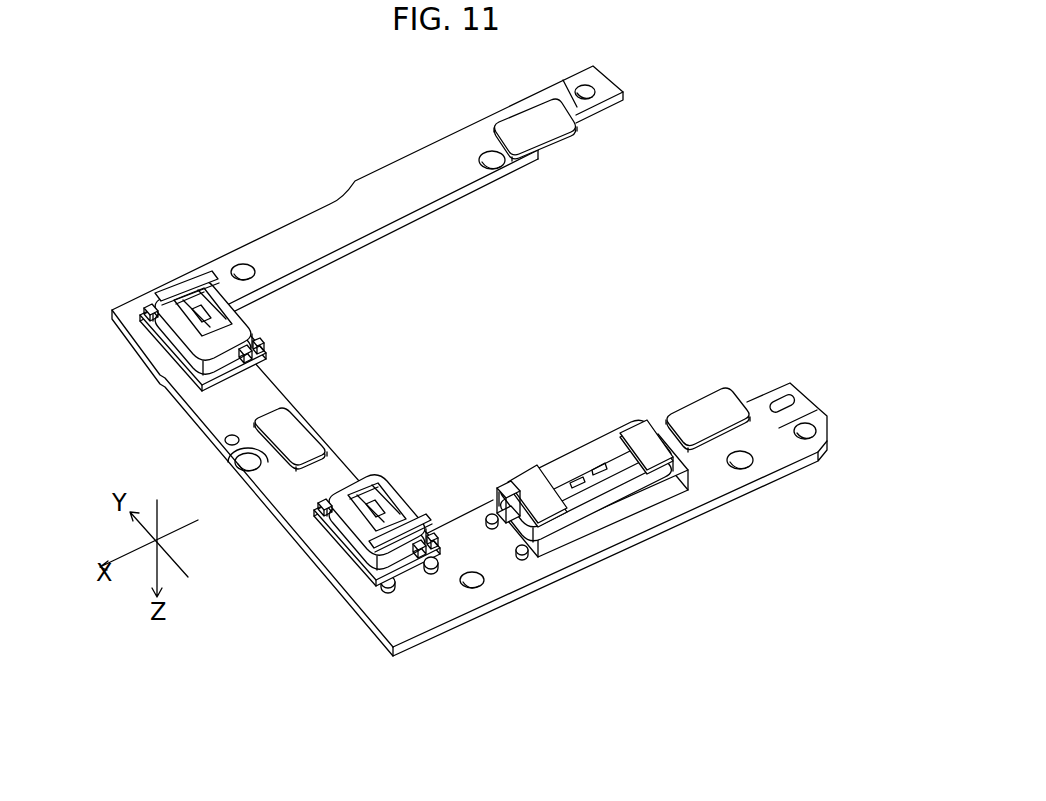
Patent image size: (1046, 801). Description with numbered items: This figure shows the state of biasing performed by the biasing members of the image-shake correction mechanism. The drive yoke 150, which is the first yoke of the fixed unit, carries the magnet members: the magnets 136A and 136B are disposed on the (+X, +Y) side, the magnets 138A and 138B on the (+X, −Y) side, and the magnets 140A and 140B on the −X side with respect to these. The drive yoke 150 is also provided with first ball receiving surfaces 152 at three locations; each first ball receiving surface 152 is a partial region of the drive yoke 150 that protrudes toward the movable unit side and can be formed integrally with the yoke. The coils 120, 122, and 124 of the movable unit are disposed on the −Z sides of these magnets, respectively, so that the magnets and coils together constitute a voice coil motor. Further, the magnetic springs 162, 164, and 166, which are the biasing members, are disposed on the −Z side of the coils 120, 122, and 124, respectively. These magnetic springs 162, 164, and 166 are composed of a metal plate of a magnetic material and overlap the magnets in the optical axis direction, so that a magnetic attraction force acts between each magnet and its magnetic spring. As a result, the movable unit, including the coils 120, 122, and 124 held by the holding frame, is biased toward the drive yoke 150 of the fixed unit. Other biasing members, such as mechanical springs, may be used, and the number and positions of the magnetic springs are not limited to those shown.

The drive yoke 150 is at (732, 118).
The first ball receiving surface 152 is at (540, 128).
The coil 120 is at (243, 320).
The coil 122 is at (381, 482).
The coil 124 is at (585, 450).
The magnetic spring 162 is at (185, 288).
The magnetic spring 164 is at (410, 515).
The magnetic spring 166 is at (530, 482).
The magnet 136A is at (170, 345).
The magnet 136B is at (252, 360).
The magnet 138A is at (343, 540).
The magnet 138B is at (435, 555).
The magnet 140A is at (510, 493).
The magnet 140B is at (622, 513).